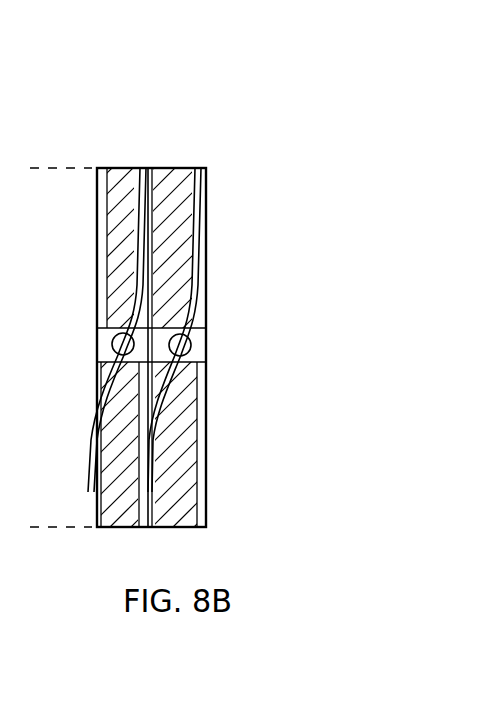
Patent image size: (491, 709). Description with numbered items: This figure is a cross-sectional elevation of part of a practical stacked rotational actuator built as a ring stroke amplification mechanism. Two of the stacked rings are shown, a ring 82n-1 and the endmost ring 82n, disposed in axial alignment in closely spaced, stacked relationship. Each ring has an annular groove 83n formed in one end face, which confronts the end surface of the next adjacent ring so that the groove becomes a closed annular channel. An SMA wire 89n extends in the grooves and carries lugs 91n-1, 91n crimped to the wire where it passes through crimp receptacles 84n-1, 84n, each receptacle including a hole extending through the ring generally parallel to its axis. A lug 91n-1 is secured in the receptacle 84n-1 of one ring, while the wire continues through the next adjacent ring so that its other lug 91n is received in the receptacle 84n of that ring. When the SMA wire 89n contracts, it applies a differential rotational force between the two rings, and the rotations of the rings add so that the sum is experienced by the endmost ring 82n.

The ring 82n-1 is at (120, 168).
The ring 82n is at (185, 168).
The SMA wire 89n is at (200, 272).
The lug 91n-1 is at (113, 336).
The lug 91n is at (190, 337).
The crimp receptacle 84n-1 is at (96, 335).
The crimp receptacle 84n is at (200, 357).
The annular groove 83n is at (203, 485).